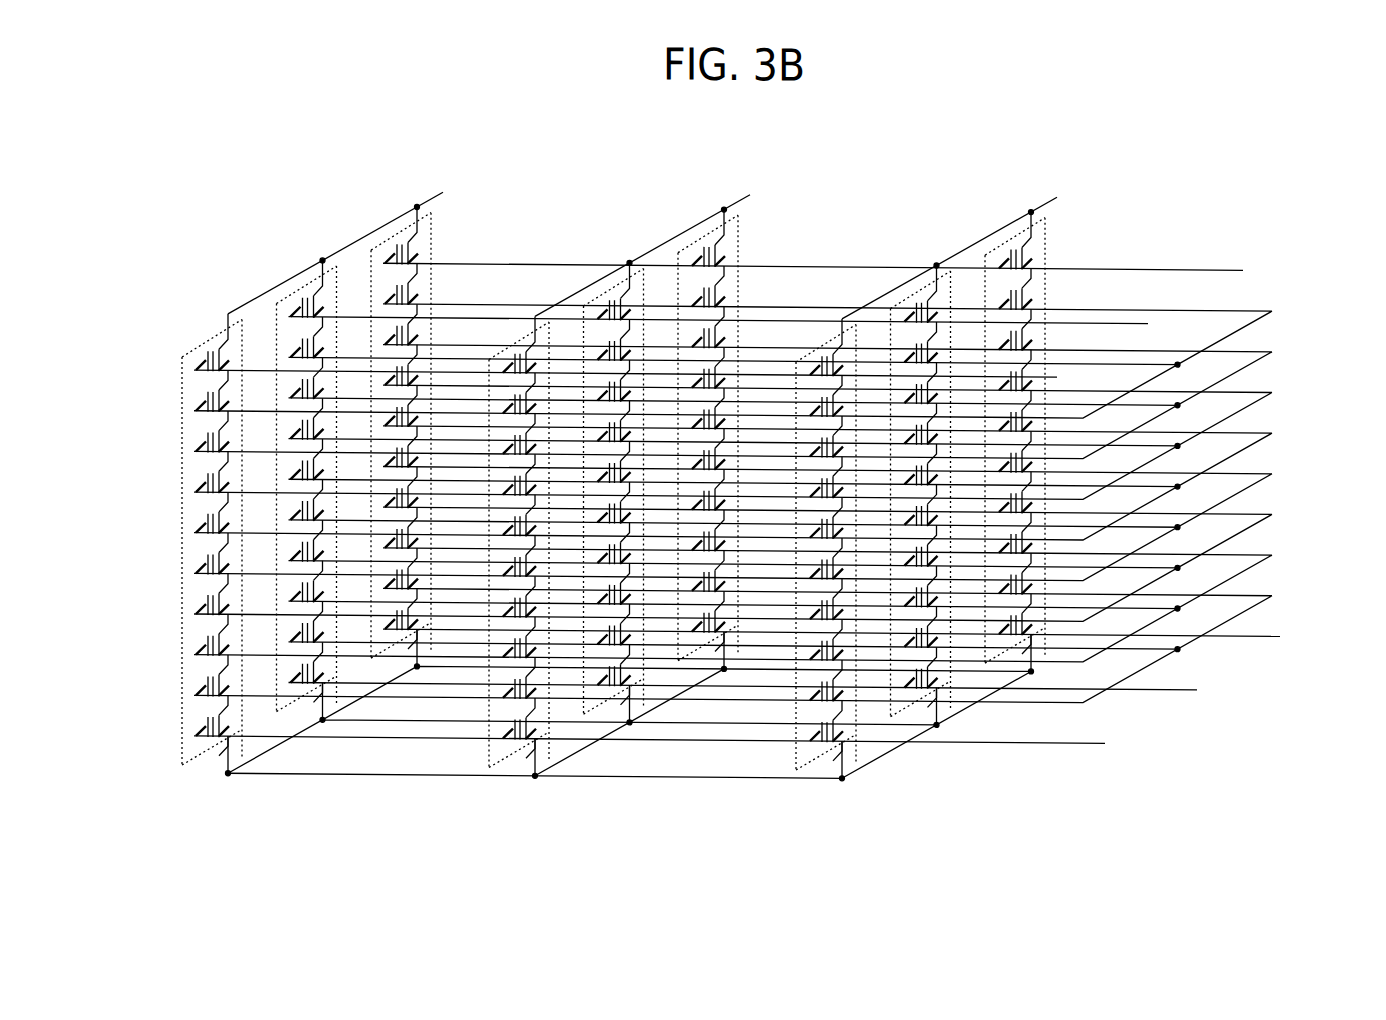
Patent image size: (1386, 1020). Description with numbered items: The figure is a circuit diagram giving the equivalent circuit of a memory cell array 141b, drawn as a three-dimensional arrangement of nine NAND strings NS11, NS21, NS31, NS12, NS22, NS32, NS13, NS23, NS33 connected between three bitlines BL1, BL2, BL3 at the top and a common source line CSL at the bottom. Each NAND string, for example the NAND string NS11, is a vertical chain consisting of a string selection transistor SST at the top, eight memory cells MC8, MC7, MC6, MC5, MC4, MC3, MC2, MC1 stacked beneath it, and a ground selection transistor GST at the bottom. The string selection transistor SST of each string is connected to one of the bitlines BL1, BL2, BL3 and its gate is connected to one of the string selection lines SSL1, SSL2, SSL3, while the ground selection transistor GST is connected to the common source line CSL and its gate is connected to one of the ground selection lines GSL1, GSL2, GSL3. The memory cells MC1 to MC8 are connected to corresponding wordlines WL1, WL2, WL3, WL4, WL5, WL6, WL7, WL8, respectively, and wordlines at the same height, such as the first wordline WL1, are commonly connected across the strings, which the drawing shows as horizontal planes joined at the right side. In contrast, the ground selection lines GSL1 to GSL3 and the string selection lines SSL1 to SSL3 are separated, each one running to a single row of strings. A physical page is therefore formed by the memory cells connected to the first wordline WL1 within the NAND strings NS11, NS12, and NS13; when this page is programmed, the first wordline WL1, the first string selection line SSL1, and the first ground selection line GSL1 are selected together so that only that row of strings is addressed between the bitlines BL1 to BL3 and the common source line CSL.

The memory cell array 141b is at (750, 131).
The NAND string NS11 is at (205, 338).
The NAND string NS21 is at (299, 284).
The NAND string NS31 is at (393, 230).
The NAND string NS12 is at (518, 338).
The NAND string NS22 is at (612, 284).
The NAND string NS32 is at (700, 230).
The NAND string NS13 is at (825, 338).
The NAND string NS23 is at (919, 284).
The NAND string NS33 is at (1007, 230).
The bitline BL1 is at (351, 241).
The bitline BL2 is at (658, 242).
The bitline BL3 is at (965, 244).
The first string selection line SSL1 is at (652, 374).
The string selection line SSL2 is at (747, 320).
The string selection line SSL3 is at (840, 266).
The first wordline WL1 is at (1180, 640).
The wordline WL2 is at (1180, 599).
The wordline WL3 is at (1180, 558).
The wordline WL4 is at (1180, 518).
The wordline WL5 is at (1180, 477).
The wordline WL6 is at (1180, 436).
The wordline WL7 is at (1180, 396).
The wordline WL8 is at (1180, 355).
The first ground selection line GSL1 is at (679, 739).
The ground selection line GSL2 is at (773, 685).
The ground selection line GSL3 is at (863, 632).
The common source line CSL is at (630, 722).
The string selection transistor SST is at (172, 365).
The memory cell MC1 is at (172, 690).
The memory cell MC2 is at (172, 649).
The memory cell MC3 is at (172, 609).
The memory cell MC4 is at (172, 568).
The memory cell MC5 is at (172, 528).
The memory cell MC6 is at (172, 487).
The memory cell MC7 is at (172, 446).
The memory cell MC8 is at (172, 406).
The ground selection transistor GST is at (172, 731).